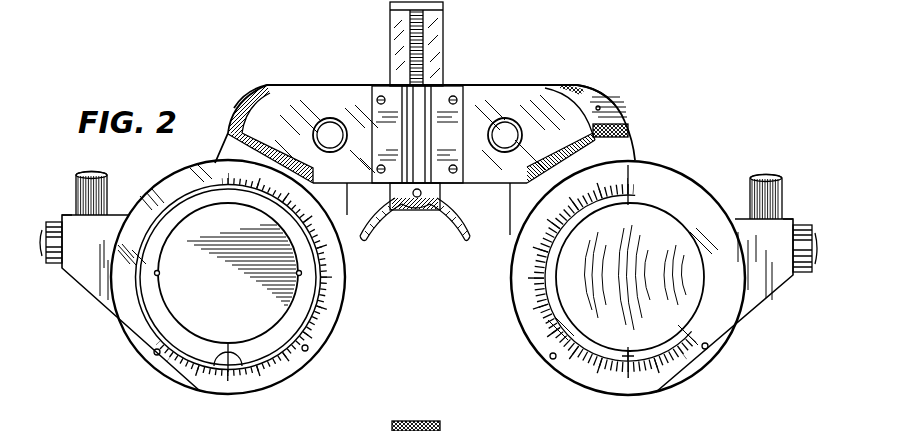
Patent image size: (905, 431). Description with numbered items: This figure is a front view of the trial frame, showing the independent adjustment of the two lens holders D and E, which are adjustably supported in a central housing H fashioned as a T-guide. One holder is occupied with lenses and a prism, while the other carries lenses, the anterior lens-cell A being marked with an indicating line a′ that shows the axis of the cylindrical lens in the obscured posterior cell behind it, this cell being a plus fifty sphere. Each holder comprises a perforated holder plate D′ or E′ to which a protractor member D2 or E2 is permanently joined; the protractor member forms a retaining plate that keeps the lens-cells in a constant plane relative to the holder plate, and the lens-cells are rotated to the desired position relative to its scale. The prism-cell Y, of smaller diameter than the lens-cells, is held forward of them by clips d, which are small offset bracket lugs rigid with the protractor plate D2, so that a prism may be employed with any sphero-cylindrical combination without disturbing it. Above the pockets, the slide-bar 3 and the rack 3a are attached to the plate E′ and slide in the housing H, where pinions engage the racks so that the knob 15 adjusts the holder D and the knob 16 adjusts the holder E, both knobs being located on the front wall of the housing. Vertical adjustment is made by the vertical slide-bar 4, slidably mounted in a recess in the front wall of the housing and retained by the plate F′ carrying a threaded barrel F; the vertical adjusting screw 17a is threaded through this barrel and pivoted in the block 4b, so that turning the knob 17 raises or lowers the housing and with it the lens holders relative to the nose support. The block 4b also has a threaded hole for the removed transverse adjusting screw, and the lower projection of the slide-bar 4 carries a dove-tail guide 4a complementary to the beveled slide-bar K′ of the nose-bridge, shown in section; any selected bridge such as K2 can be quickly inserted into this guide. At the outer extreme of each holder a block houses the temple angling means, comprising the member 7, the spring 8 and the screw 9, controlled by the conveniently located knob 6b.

The slide-bar 3 is at (630, 133).
The rack 3a is at (622, 108).
The vertical slide-bar 4 is at (398, 50).
The dove-tail guide 4a is at (388, 216).
The block 4b is at (442, 192).
The knob 6b is at (108, 186).
The member 7 is at (56, 214).
The spring 8 is at (52, 266).
The screw 9 is at (42, 250).
The knob 15 is at (323, 118).
The knob 16 is at (506, 118).
The knob 17 is at (392, 426).
The vertical adjusting screw 17a is at (443, 37).
The anterior lens-cell A is at (130, 312).
The lens holder D is at (340, 330).
The holder plate D′ is at (247, 92).
The protractor member D2 is at (250, 388).
The lens holder E is at (522, 327).
The holder plate E′ is at (575, 88).
The protractor member E2 is at (665, 385).
The threaded barrel F is at (413, 125).
The plate F′ is at (447, 134).
The central housing H is at (537, 108).
The slide-bar K′ is at (412, 212).
The bridge K2 is at (466, 236).
The prism-cell Y is at (160, 322).
The indicating line a′ is at (636, 358).
The clips d is at (706, 348).